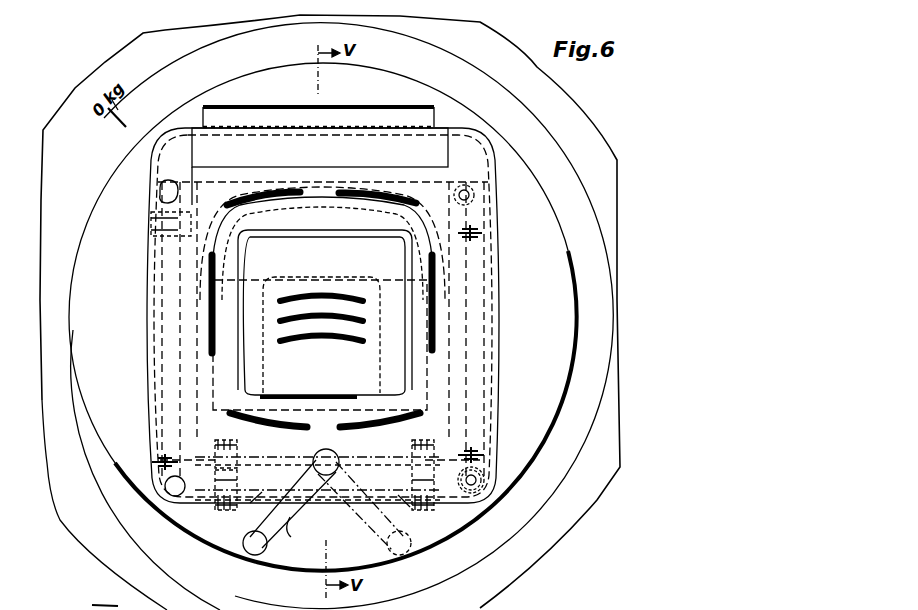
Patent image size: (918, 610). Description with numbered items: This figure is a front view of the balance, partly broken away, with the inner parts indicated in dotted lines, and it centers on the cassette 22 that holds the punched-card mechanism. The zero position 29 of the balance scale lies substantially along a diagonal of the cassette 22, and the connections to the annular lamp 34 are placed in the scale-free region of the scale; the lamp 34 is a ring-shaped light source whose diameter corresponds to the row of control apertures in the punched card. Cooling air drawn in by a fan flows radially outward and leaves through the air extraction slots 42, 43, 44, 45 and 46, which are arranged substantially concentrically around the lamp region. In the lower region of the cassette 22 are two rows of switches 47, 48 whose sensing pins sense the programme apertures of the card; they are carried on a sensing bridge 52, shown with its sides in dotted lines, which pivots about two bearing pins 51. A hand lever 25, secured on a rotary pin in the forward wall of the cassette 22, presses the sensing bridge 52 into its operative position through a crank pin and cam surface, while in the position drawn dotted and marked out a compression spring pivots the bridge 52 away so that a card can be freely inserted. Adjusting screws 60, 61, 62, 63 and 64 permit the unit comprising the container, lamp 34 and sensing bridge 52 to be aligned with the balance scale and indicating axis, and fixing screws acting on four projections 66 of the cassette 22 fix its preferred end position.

The cassette 22 is at (497, 352).
The hand lever 25 is at (327, 504).
The zero position 29 is at (117, 121).
The annular lamp 34 is at (385, 232).
The air extraction slot 42 is at (252, 200).
The air extraction slot 43 is at (363, 193).
The air extraction slot 44 is at (209, 262).
The air extraction slot 45 is at (232, 416).
The air extraction slot 46 is at (416, 417).
The row of switches 47 is at (232, 451).
The row of switches 48 is at (232, 483).
The bearing pin 51 is at (165, 228).
The sensing bridge 52 is at (378, 470).
The adjusting screw 60 is at (158, 462).
The adjusting screw 61 is at (482, 455).
The adjusting screw 62 is at (482, 232).
The adjusting screw 63 is at (250, 503).
The adjusting screw 64 is at (410, 507).
The projection 66 is at (482, 482).